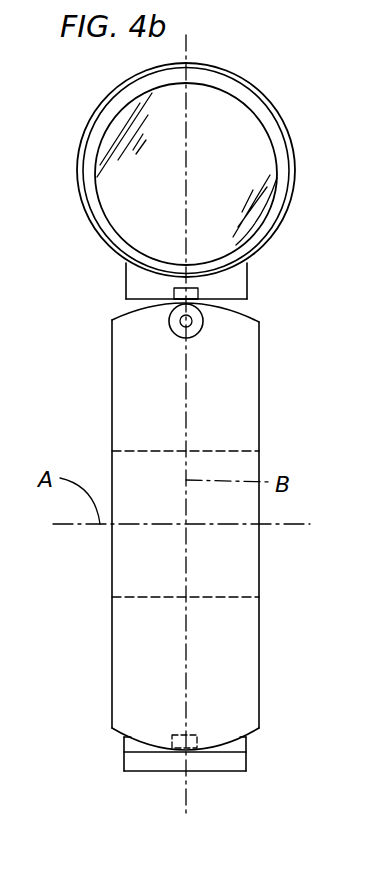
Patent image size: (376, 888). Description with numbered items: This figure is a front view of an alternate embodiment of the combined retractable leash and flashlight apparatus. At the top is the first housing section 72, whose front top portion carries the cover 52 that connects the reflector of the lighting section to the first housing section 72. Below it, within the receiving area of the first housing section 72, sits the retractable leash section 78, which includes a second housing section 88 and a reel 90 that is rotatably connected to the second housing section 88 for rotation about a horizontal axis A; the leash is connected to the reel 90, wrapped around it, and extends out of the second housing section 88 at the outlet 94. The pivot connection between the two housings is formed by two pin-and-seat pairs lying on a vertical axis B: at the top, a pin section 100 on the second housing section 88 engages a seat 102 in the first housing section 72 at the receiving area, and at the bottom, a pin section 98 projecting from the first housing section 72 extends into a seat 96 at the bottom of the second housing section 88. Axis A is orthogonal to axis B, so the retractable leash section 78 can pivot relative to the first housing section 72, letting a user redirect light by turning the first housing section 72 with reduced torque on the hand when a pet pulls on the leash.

The cover 52 is at (265, 96).
The first housing section 72 is at (126, 285).
The retractable leash section 78 is at (259, 650).
The second housing section 88 is at (112, 633).
The reel 90 is at (135, 451).
The outlet 94 is at (201, 327).
The seat 96 is at (173, 735).
The pin section 98 is at (177, 747).
The pin section 100 is at (174, 292).
The seat 102 is at (198, 293).